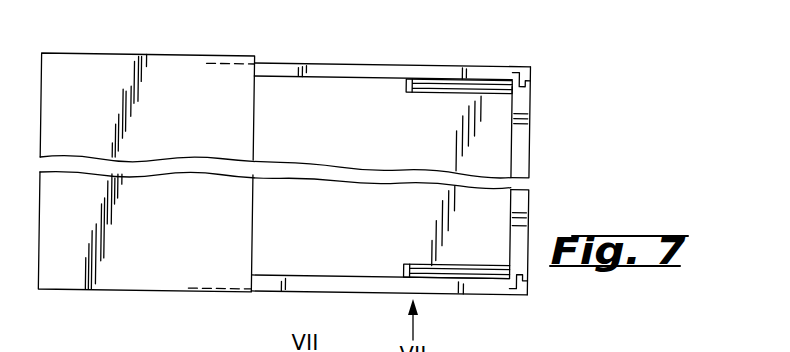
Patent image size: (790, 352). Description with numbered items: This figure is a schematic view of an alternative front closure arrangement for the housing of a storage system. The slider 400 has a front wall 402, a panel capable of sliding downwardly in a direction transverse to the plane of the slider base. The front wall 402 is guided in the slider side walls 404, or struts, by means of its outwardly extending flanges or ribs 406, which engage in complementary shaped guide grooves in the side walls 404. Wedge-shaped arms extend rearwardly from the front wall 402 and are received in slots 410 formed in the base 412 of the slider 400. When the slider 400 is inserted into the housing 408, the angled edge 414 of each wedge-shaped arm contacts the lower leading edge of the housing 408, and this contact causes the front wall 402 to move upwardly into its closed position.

The slider 400 is at (543, 130).
The front wall 402 is at (521, 169).
The slider side walls 404 is at (362, 67).
The ribs 406 is at (520, 72).
The housing 408 is at (173, 206).
The slots 410 is at (428, 94).
The base 412 is at (499, 206).
The angled edge 414 is at (405, 84).